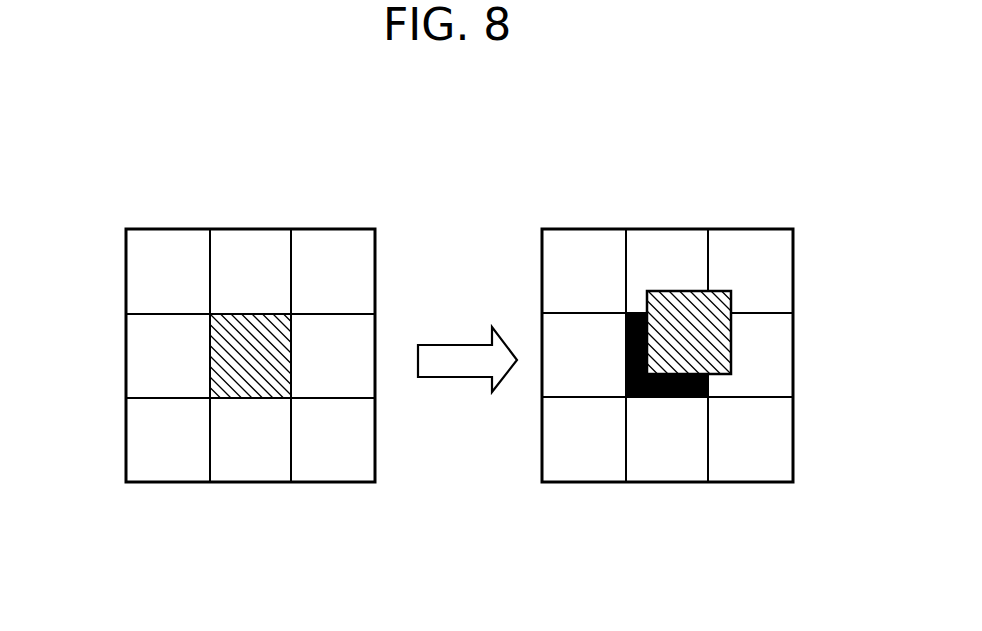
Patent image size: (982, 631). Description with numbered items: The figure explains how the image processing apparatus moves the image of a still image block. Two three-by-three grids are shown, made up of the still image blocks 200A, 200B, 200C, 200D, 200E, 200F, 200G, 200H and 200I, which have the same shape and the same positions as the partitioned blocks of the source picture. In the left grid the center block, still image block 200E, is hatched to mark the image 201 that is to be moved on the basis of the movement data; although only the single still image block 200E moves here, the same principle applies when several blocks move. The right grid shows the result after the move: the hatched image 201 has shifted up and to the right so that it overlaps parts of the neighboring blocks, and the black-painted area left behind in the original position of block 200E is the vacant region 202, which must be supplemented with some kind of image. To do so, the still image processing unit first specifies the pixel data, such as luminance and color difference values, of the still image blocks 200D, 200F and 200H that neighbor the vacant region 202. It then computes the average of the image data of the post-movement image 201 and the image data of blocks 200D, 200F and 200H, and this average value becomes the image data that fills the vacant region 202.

The still image block 200A is at (138, 273).
The still image block 200B is at (228, 238).
The still image block 200C is at (353, 238).
The still image block 200D is at (138, 358).
The still image block 200E is at (278, 313).
The still image block 200F is at (368, 328).
The still image block 200G is at (138, 443).
The still image block 200H is at (226, 473).
The still image block 200I is at (354, 472).
The image 201 is at (272, 378).
The vacant region 202 is at (623, 382).